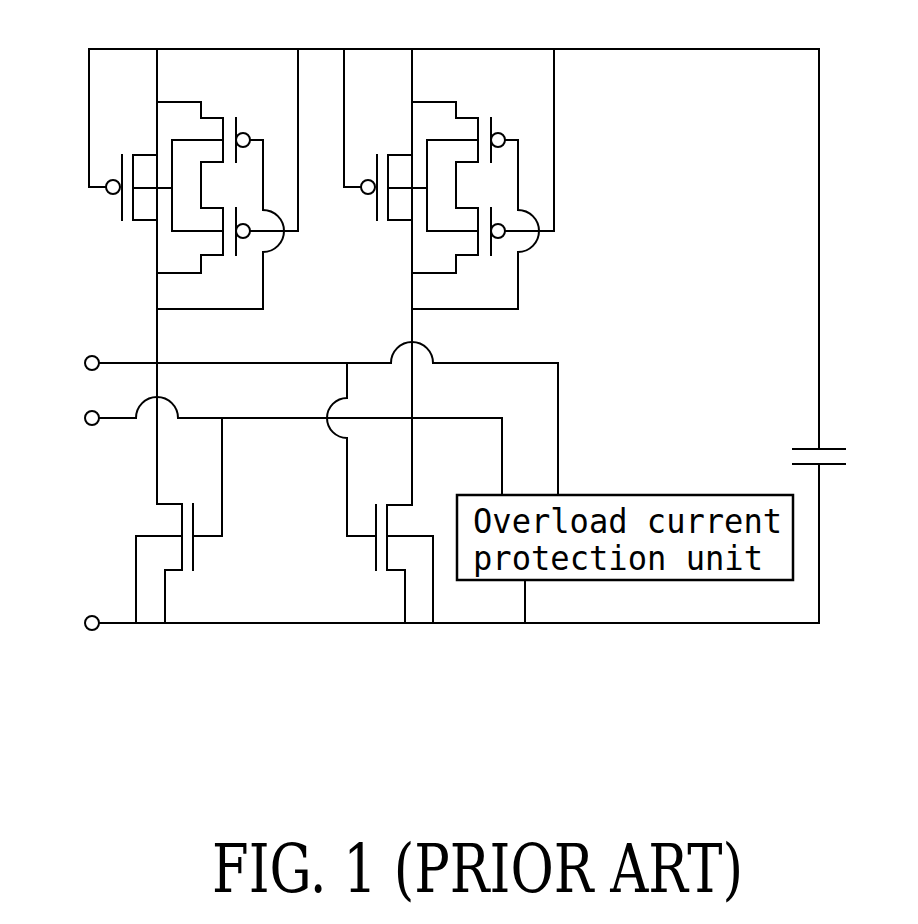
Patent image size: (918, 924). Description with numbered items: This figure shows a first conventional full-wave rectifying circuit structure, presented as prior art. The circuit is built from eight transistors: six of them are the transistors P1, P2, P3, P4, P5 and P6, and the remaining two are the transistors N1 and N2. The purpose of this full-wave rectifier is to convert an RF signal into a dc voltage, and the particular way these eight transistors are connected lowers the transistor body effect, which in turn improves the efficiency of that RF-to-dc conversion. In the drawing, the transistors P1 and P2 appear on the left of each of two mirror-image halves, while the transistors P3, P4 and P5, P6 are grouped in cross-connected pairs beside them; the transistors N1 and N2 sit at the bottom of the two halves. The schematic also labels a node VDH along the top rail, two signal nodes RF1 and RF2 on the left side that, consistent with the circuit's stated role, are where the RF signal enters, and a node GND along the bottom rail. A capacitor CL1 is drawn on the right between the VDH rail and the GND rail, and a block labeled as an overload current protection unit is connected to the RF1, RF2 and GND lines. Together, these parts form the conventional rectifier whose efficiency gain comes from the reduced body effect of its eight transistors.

The transistor P1 is at (118, 141).
The transistor P2 is at (372, 140).
The transistor P3 is at (210, 153).
The transistor P4 is at (227, 179).
The transistor P5 is at (465, 153).
The transistor P6 is at (483, 179).
The transistor N1 is at (193, 563).
The transistor N2 is at (390, 564).
The load capacitor CL1 is at (834, 336).
The high voltage supply terminal VDH is at (469, 24).
The first RF input terminal RF1 is at (285, 438).
The second RF input terminal RF2 is at (257, 462).
The ground terminal GND is at (418, 623).